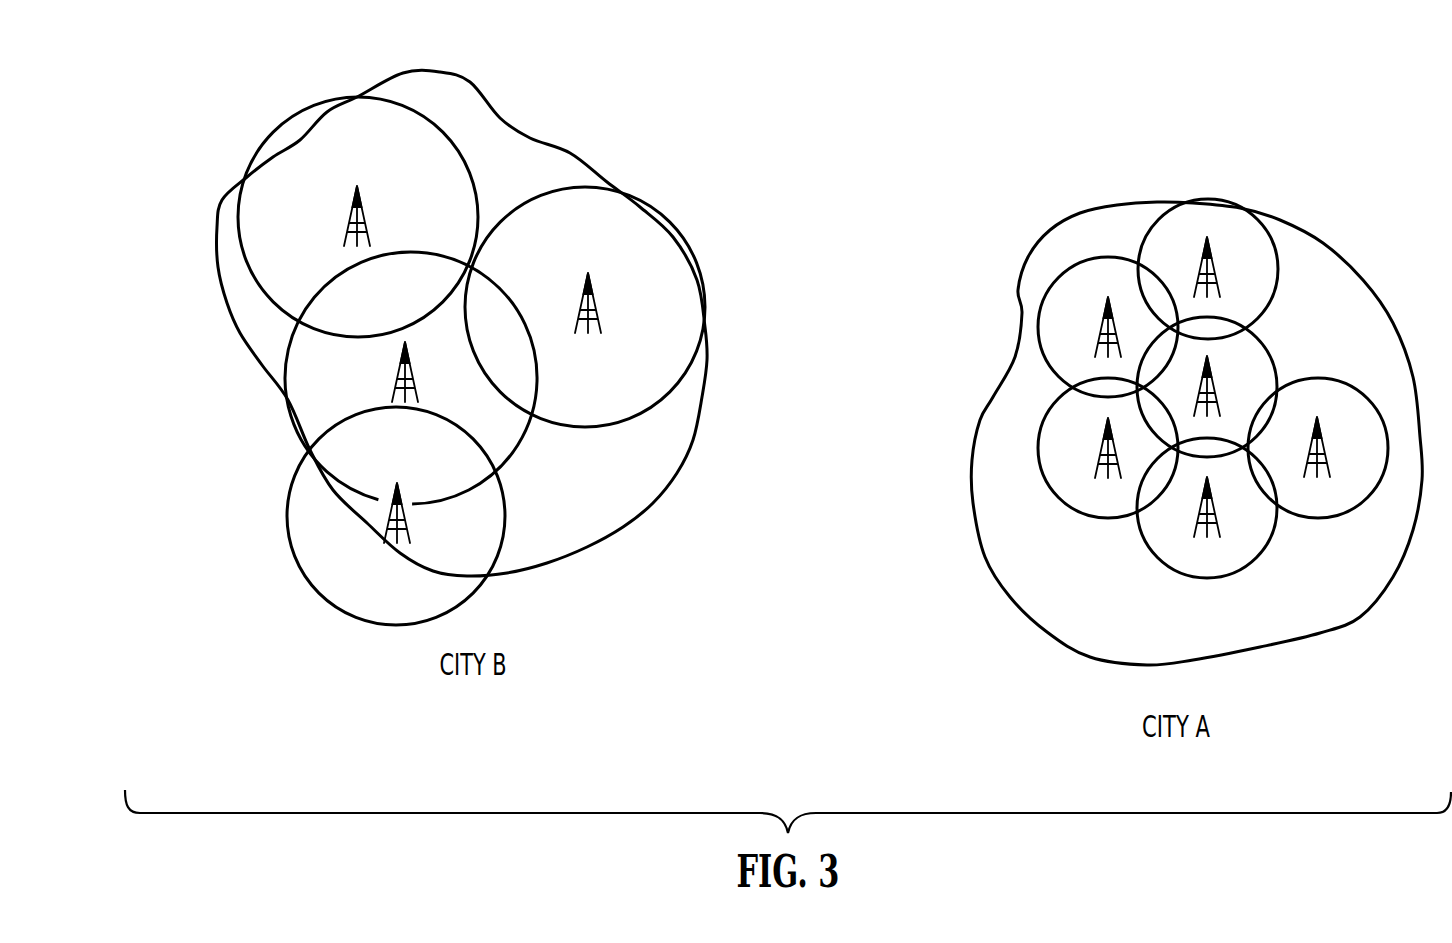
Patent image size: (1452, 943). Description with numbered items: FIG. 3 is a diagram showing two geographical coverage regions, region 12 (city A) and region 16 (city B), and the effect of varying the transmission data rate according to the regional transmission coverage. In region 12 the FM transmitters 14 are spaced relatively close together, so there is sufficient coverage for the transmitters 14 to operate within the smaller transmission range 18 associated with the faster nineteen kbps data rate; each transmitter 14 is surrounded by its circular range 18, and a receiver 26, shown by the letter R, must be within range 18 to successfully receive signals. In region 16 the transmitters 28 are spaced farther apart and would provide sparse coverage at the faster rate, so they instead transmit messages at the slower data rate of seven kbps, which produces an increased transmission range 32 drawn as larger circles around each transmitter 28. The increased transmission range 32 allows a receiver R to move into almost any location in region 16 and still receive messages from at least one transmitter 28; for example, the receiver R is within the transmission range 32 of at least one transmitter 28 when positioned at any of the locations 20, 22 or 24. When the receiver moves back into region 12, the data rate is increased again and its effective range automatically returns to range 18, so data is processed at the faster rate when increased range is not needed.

The region 12 is at (1355, 620).
The FM transmitter 14 is at (1100, 320).
The region 16 is at (218, 213).
The transmission range 18 is at (1245, 207).
The location 20 is at (520, 375).
The location 22 is at (515, 254).
The location 24 is at (518, 521).
The receiver 26 is at (1155, 533).
The transmitter 28 is at (398, 378).
The increased transmission range 32 is at (318, 100).